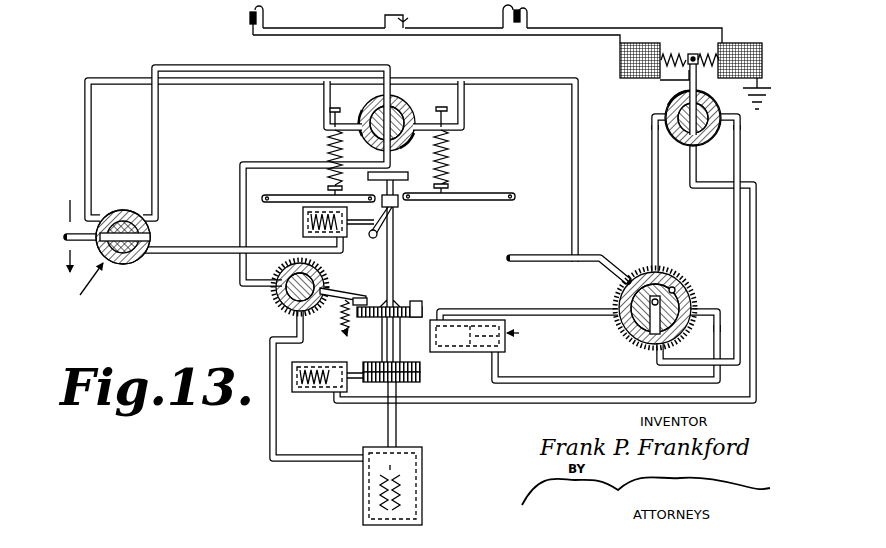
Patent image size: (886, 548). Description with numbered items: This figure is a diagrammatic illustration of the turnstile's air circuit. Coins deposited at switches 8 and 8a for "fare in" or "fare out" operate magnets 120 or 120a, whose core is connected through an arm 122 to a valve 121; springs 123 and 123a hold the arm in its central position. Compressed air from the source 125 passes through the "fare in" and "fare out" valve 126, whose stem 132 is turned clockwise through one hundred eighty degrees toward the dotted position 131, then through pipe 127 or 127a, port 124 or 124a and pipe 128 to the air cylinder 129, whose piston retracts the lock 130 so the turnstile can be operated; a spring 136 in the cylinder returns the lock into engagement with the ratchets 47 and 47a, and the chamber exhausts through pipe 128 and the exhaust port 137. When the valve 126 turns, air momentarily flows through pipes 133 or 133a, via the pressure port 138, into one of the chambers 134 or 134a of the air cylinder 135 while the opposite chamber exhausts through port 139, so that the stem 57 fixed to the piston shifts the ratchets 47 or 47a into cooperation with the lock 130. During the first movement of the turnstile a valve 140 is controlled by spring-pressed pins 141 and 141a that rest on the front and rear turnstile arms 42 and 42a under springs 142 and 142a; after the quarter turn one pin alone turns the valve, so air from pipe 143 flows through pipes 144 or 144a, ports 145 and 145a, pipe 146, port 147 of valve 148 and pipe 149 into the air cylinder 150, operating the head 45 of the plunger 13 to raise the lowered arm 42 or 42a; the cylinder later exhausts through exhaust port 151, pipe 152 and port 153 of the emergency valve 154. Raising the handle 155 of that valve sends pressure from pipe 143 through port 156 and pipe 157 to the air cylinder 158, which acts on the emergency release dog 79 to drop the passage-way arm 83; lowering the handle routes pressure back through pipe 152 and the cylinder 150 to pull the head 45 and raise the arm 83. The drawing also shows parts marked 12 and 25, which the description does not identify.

The switch 8 is at (257, 10).
The switch 8a is at (523, 10).
The vertical shaft 12 is at (393, 268).
The plunger 13 is at (397, 428).
The gear 25 is at (392, 319).
The turnstile arm 42 is at (300, 195).
The turnstile arm 42a is at (490, 200).
The head 45 is at (397, 172).
The ratchet 47 is at (420, 369).
The ratchet 47a is at (420, 380).
The stem 57 is at (526, 329).
The emergency release dog 79 is at (392, 218).
The passage-way arm 83 is at (396, 202).
The magnet 120 is at (620, 53).
The magnet 120a is at (733, 43).
The valve 121 is at (664, 106).
The arm 122 is at (695, 52).
The spring 123 is at (672, 53).
The spring 123a is at (712, 46).
The port 124 is at (722, 132).
The port 124a is at (667, 138).
The source 125 is at (505, 259).
The fare in and fare out valve 126 is at (686, 284).
The pipe 127 is at (738, 168).
The pipe 127a is at (651, 210).
The pipe 128 is at (757, 268).
The air cylinder 129 is at (343, 362).
The lock 130 is at (360, 380).
The dotted position 131 is at (641, 270).
The stem 132 is at (620, 336).
The pipe 133 is at (573, 307).
The pipe 133a is at (538, 373).
The chamber 134 is at (447, 320).
The chamber 134a is at (498, 322).
The air cylinder 135 is at (466, 323).
The spring 136 is at (308, 392).
The exhaust port 137 is at (664, 100).
The pressure port 138 is at (668, 341).
The exhaust port 139 is at (673, 284).
The valve 140 is at (406, 106).
The spring pressed pin 141 is at (330, 116).
The spring pressed pin 141a is at (467, 115).
The spring 142 is at (328, 143).
The spring 142a is at (448, 162).
The pipe 143 is at (96, 80).
The pipe 144 is at (322, 97).
The pipe 144a is at (467, 97).
The port 145 is at (368, 108).
The port 145a is at (415, 137).
The pipe 146 is at (246, 148).
The port 147 is at (282, 299).
The valve 148 is at (326, 274).
The pipe 149 is at (273, 429).
The air cylinder 150 is at (422, 485).
The exhaust port 151 is at (388, 110).
The pipe 152 is at (222, 67).
The port 153 is at (124, 208).
The emergency valve 154 is at (83, 286).
The handle 155 is at (67, 236).
The pressure port 156 is at (150, 236).
The pipe 157 is at (194, 256).
The air cylinder 158 is at (303, 236).